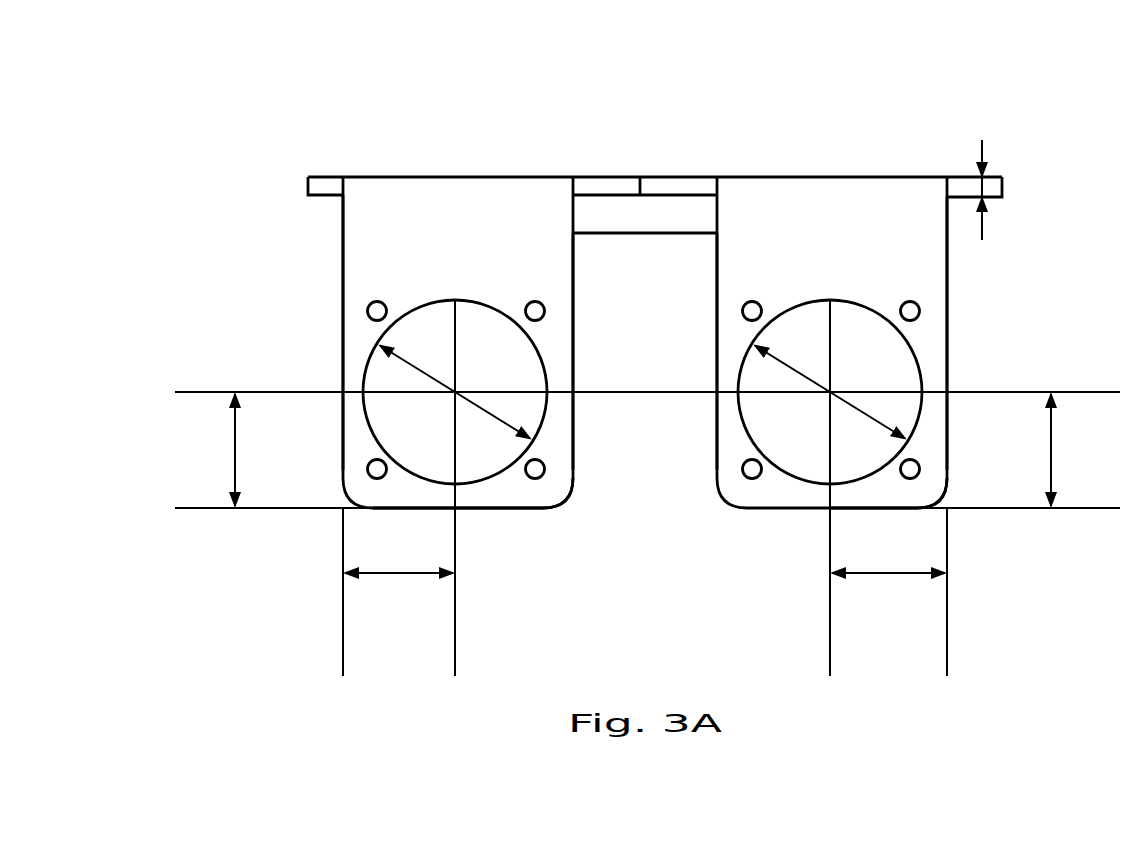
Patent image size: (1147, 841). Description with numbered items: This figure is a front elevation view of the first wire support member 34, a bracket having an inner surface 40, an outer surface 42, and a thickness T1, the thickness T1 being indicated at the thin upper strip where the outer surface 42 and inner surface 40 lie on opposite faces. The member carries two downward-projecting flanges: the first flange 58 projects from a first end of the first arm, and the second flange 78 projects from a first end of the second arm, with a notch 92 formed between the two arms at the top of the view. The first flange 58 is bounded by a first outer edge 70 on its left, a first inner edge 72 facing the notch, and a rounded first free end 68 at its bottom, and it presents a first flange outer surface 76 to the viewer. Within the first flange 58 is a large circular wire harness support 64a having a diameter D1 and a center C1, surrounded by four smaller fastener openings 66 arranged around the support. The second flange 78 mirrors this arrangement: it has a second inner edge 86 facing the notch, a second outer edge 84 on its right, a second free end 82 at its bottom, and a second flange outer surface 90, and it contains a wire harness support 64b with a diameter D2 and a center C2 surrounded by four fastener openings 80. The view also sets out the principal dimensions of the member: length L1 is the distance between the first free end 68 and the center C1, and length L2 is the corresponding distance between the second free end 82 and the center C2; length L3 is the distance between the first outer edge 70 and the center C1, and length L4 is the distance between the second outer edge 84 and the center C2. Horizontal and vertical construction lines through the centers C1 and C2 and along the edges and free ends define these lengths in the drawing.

The first wire support member 34 is at (633, 300).
The outer surface 42 is at (598, 177).
The notch 92 is at (641, 176).
The inner surface 40 is at (662, 198).
The first flange 58 is at (341, 268).
The first outer edge 70 is at (343, 330).
The first inner edge 72 is at (573, 297).
The first flange outer surface 76 is at (420, 490).
The first free end 68 is at (522, 510).
The wire harness support 64a is at (446, 296).
The fastener openings 66 is at (541, 466).
The second flange 78 is at (951, 328).
The second inner edge 86 is at (718, 375).
The second flange outer surface 90 is at (930, 262).
The second outer edge 84 is at (950, 435).
The second free end 82 is at (890, 510).
The wire harness support 64b is at (839, 296).
The fastener openings 80 is at (905, 478).
The center C1 is at (458, 392).
The center C2 is at (830, 392).
The diameter D1 is at (470, 410).
The diameter D2 is at (882, 420).
The length L1 is at (232, 447).
The length L2 is at (1052, 458).
The length L3 is at (398, 576).
The length L4 is at (878, 576).
The thickness T1 is at (1002, 187).